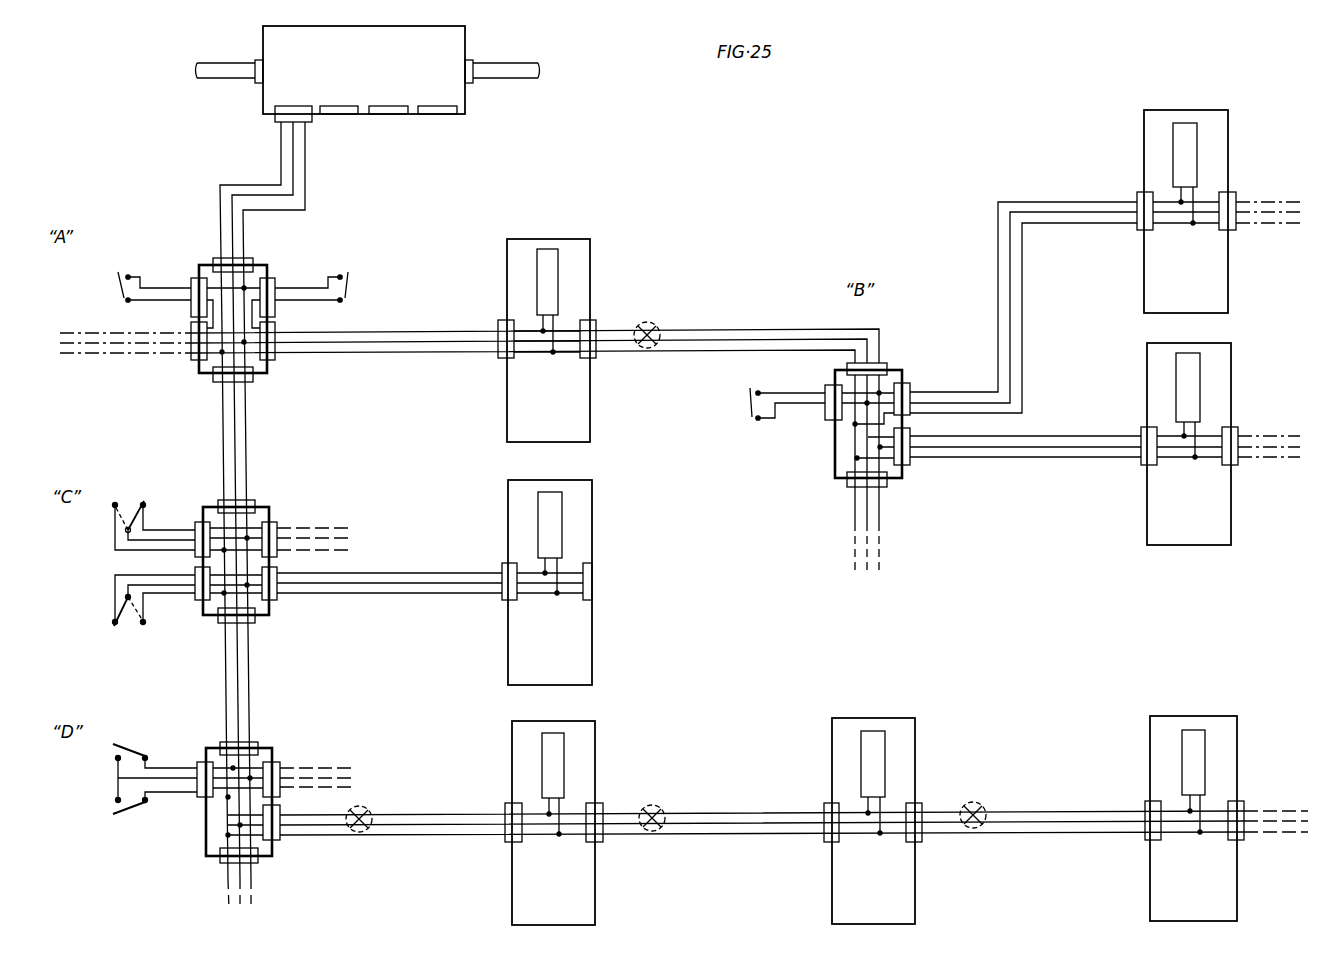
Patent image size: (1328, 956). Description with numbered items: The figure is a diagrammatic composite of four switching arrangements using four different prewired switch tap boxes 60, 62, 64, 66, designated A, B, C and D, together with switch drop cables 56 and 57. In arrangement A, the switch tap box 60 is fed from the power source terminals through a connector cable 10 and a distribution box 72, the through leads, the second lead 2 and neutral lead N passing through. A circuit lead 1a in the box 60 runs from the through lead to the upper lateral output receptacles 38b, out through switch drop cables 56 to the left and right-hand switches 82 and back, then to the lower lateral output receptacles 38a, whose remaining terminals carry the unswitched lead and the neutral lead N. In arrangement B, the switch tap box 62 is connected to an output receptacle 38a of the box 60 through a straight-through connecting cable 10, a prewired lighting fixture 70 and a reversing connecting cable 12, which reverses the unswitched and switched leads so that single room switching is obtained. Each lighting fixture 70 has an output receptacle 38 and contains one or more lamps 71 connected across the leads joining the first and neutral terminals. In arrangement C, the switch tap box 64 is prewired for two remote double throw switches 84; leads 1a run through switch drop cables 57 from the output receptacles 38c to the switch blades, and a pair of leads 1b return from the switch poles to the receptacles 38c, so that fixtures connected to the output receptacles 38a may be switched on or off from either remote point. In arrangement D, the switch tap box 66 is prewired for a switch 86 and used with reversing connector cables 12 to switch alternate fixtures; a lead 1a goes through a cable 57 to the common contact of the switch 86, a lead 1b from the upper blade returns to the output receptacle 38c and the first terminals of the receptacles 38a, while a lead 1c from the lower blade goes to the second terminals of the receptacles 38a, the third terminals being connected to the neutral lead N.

The distribution box 72 is at (368, 70).
The output receptacle 38 is at (340, 106).
The through lead 2 is at (293, 170).
The neutral through lead N is at (283, 184).
The connector cable 10 is at (255, 182).
The switch drop cable 56 is at (160, 280).
The circuit lead 1a is at (213, 272).
The circuit lead 1b is at (172, 575).
The circuit lead 1c is at (186, 780).
The prewired switch tap box 60 is at (258, 262).
The prewired switch tap box 62 is at (904, 378).
The switch tap box 64 is at (265, 505).
The switch tap box 66 is at (268, 748).
The switch 82 is at (118, 293).
The switch 84 is at (113, 500).
The switch 86 is at (114, 774).
The switch drop cable 57 is at (178, 526).
The lower lateral output receptacle 38a is at (200, 365).
The upper lateral output receptacle 38b is at (200, 303).
The output receptacle 38c is at (212, 580).
The prewired lighting fixture 70 is at (585, 248).
The lamp 71 is at (538, 277).
The reversing connecting cable 12 is at (698, 352).